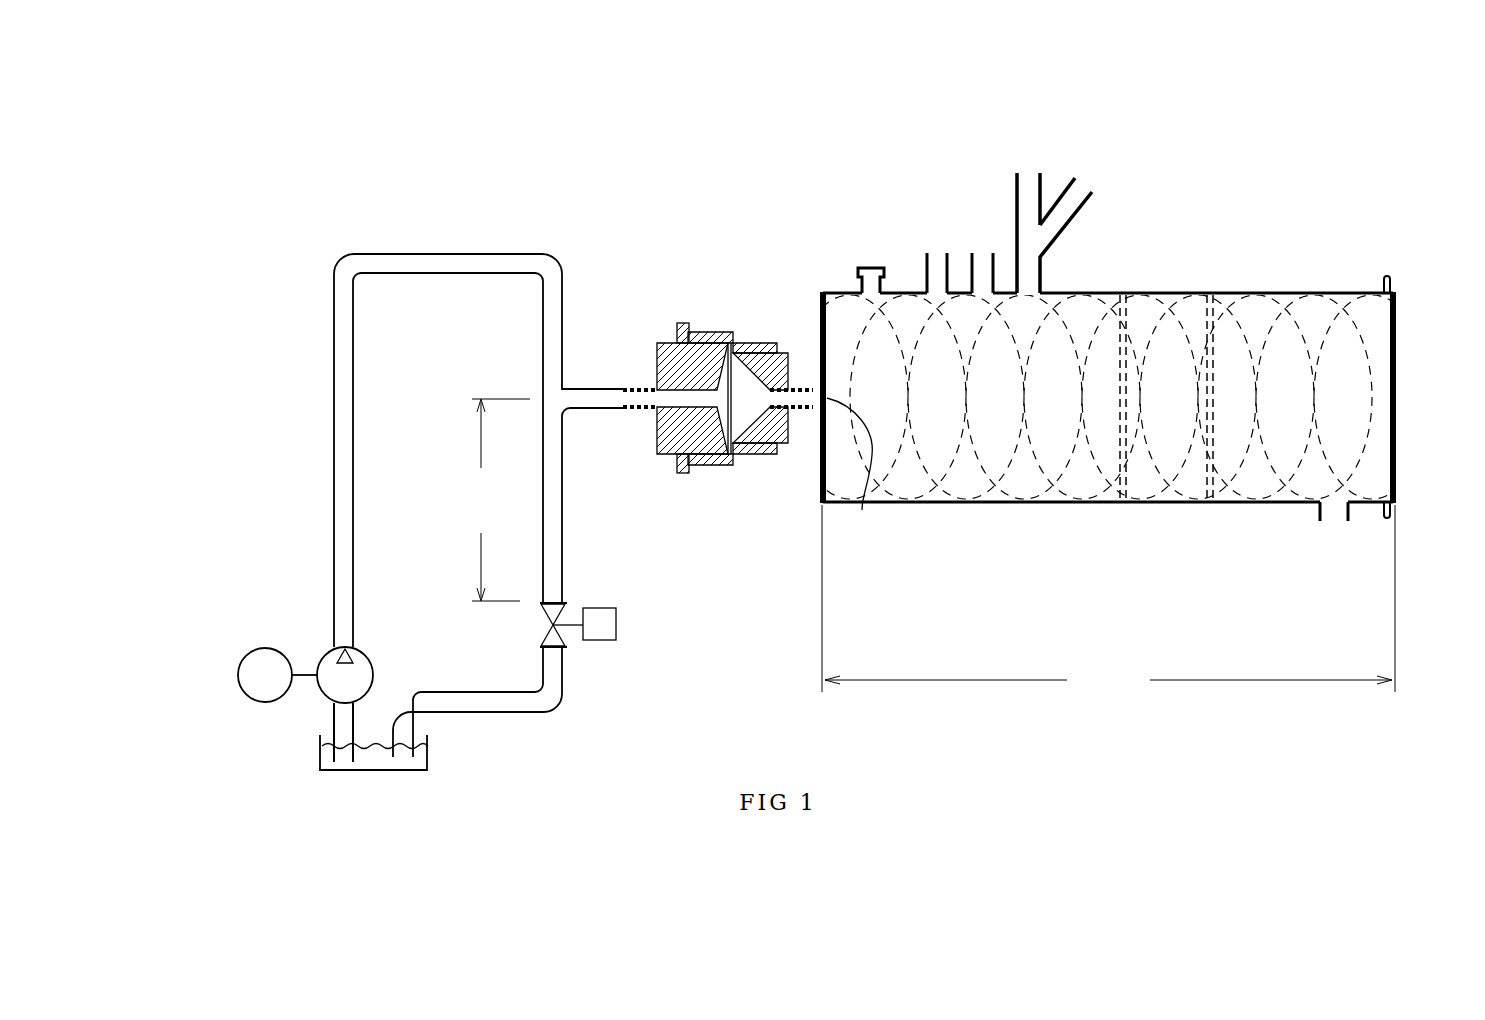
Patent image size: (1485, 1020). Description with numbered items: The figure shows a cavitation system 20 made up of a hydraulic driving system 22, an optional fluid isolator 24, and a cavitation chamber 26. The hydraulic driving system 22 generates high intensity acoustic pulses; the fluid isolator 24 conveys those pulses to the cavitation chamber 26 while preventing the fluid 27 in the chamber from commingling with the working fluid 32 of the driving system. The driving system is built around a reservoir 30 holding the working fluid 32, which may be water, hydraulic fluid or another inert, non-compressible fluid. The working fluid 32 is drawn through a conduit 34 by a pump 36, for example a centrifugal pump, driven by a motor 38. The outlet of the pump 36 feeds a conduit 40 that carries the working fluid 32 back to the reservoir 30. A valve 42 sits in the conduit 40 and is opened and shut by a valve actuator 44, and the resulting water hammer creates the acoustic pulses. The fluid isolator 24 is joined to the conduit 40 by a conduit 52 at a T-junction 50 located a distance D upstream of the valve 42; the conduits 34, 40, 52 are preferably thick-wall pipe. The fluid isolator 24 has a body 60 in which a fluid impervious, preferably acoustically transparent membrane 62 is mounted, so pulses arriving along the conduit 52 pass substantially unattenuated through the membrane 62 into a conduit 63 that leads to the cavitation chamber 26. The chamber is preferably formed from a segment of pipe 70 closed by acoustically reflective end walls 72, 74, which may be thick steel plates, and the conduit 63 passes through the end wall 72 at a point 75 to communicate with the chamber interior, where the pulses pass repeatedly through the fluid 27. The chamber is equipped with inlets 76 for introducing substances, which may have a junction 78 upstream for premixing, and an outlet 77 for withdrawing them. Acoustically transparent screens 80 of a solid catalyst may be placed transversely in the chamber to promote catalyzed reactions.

The cavitation system 20 is at (714, 185).
The hydraulic driving system 22 is at (465, 218).
The fluid isolator 24 is at (709, 310).
The cavitation chamber 26 is at (1198, 246).
The fluid 27 is at (1247, 328).
The reservoir 30 is at (320, 760).
The working fluid 32 is at (427, 748).
The conduit 34 is at (330, 722).
The pump 36 is at (320, 648).
The motor 38 is at (258, 645).
The conduit 40 is at (347, 368).
The valve 42 is at (540, 625).
The valve actuator 44 is at (618, 625).
The T-junction 50 is at (557, 395).
The conduit 52 is at (602, 397).
The body 60 is at (657, 437).
The fluid impervious membrane 62 is at (788, 340).
The conduit 63 is at (750, 457).
The pipe 70 is at (1103, 290).
The end wall 72 is at (818, 484).
The end wall 74 is at (1400, 363).
The point 75 is at (862, 510).
The inlets 76 is at (982, 250).
The outlet 77 is at (1318, 522).
The junction 78 is at (1065, 185).
The screens 80 is at (1130, 500).